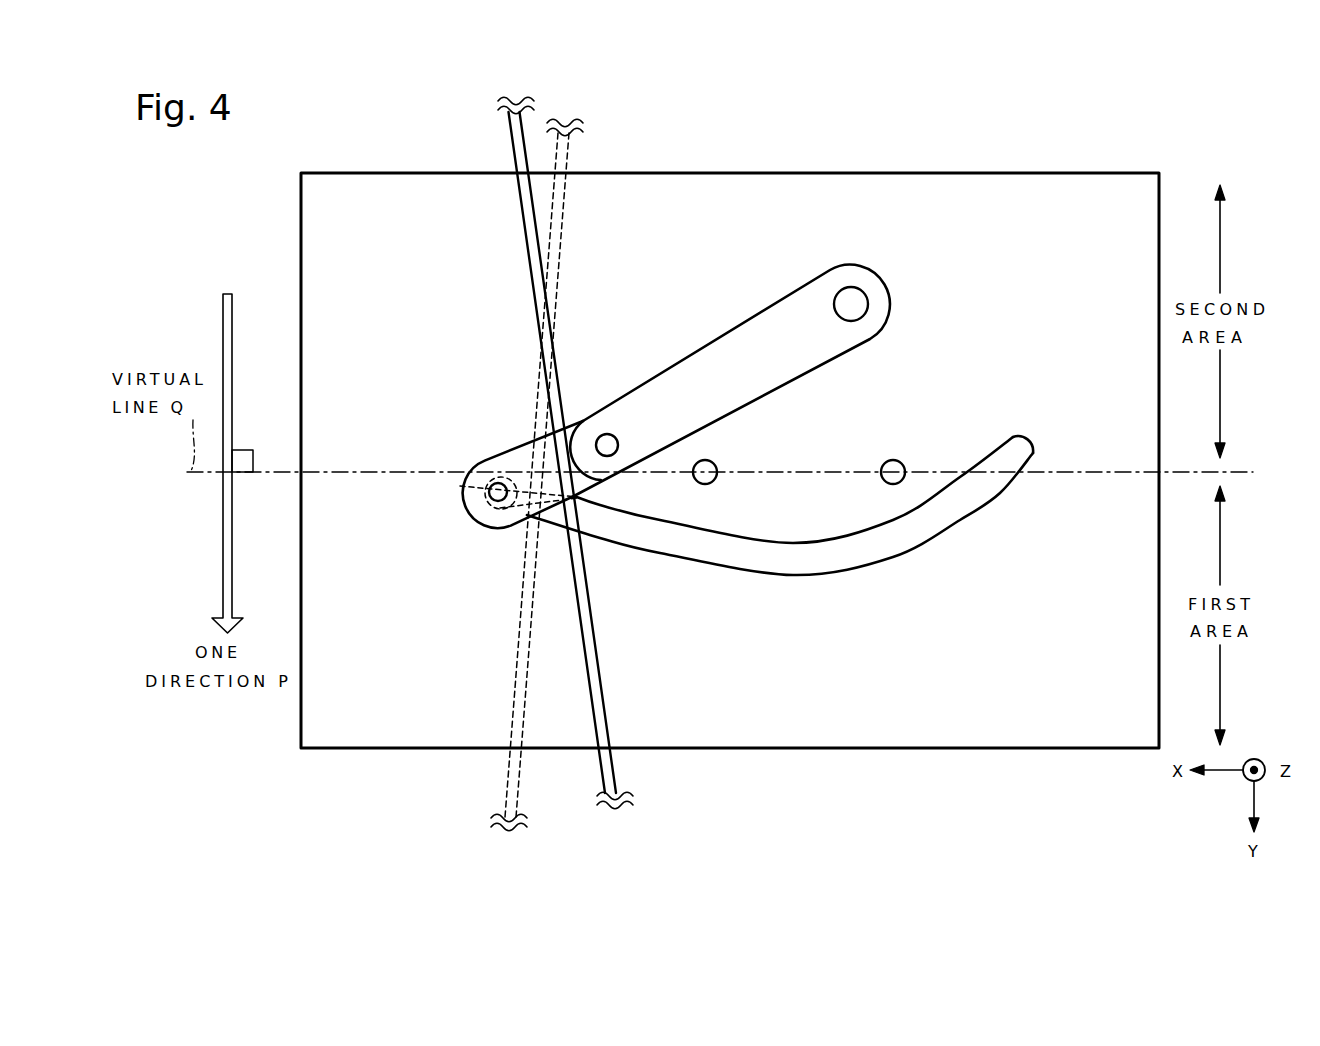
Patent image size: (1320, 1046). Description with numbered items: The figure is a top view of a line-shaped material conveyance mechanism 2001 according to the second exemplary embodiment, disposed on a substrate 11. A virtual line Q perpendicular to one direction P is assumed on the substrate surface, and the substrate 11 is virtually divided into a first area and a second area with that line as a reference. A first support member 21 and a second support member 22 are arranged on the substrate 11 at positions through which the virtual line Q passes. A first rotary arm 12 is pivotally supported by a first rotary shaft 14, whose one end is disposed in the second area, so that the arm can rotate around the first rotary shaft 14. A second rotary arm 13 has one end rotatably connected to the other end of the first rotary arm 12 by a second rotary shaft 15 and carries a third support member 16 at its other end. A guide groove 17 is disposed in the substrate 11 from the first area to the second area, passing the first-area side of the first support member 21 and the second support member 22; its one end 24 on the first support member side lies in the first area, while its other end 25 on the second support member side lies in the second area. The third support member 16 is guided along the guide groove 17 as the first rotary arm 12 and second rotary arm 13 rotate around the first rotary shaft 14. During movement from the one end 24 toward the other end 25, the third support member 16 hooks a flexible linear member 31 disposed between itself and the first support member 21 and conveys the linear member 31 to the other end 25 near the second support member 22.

The line-shaped material conveyance mechanism 2001 is at (890, 146).
The substrate 11 is at (1040, 194).
The first rotary arm 12 is at (763, 330).
The second rotary arm 13 is at (520, 464).
The first rotary shaft 14 is at (851, 300).
The second rotary shaft 15 is at (607, 434).
The third support member 16 is at (496, 500).
The guide groove 17 is at (960, 512).
The first support member 21 is at (708, 466).
The second support member 22 is at (895, 465).
The one end of the guide groove 24 is at (460, 486).
The other end of the guide groove 25 is at (1019, 442).
The flexible linear member 31 is at (520, 122).